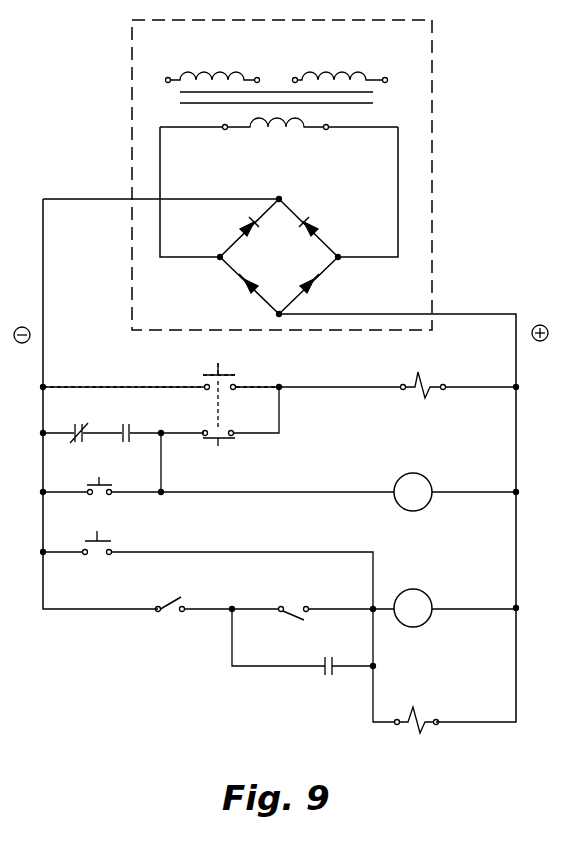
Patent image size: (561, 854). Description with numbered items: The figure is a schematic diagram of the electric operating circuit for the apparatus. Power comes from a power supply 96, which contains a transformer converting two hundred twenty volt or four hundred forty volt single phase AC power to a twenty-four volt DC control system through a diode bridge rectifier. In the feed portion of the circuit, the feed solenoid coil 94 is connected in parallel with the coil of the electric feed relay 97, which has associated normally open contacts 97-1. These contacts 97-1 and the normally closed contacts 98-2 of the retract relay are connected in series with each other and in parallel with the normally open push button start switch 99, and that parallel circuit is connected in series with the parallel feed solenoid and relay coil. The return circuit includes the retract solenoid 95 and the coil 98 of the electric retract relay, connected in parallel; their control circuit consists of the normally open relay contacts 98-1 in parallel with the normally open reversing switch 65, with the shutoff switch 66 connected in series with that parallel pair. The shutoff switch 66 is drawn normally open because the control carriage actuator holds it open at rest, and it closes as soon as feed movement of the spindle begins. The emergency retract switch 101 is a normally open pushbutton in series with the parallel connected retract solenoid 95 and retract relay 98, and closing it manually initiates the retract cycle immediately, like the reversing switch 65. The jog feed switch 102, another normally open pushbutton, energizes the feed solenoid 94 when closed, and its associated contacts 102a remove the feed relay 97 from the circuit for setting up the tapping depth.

The power supply 96 is at (436, 148).
The jog feed switch 102 is at (222, 372).
The contacts of jog feed switch 102a is at (223, 441).
The feed solenoid coil 94 is at (416, 381).
The normally closed contacts 98-2 is at (75, 431).
The normally open contacts 97-1 is at (131, 431).
The push button start switch 99 is at (91, 483).
The electric feed relay 97 is at (338, 492).
The emergency retract switch 101 is at (108, 540).
The coil of electric retract relay 98 is at (444, 608).
The shutoff switch 66 is at (169, 606).
The reversing switch 65 is at (289, 619).
The normally open relay contacts 98-1 is at (323, 672).
The retract solenoid 95 is at (421, 728).